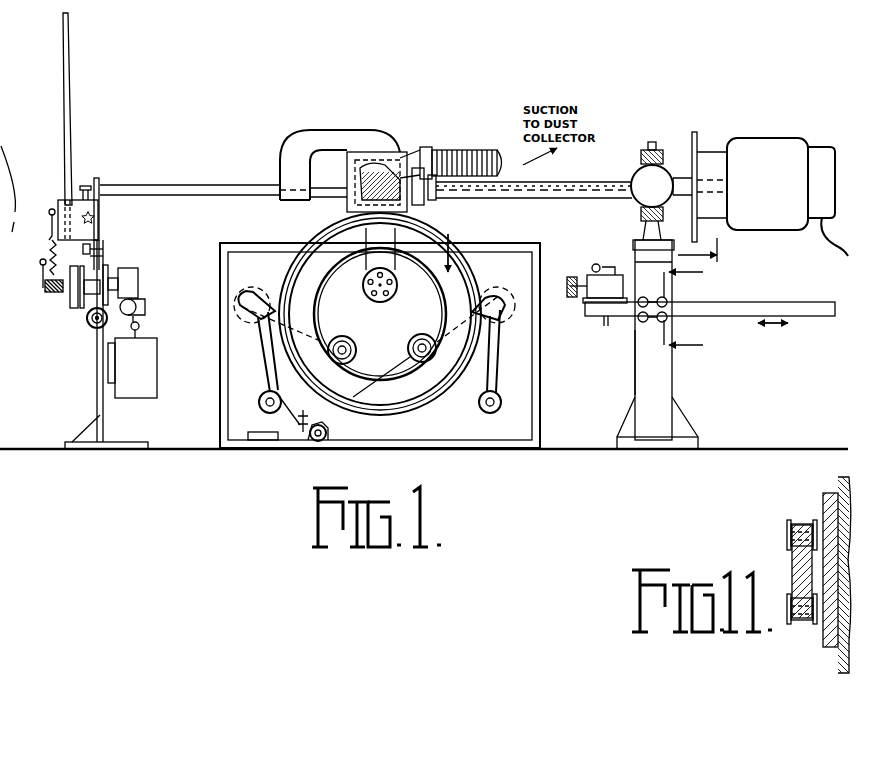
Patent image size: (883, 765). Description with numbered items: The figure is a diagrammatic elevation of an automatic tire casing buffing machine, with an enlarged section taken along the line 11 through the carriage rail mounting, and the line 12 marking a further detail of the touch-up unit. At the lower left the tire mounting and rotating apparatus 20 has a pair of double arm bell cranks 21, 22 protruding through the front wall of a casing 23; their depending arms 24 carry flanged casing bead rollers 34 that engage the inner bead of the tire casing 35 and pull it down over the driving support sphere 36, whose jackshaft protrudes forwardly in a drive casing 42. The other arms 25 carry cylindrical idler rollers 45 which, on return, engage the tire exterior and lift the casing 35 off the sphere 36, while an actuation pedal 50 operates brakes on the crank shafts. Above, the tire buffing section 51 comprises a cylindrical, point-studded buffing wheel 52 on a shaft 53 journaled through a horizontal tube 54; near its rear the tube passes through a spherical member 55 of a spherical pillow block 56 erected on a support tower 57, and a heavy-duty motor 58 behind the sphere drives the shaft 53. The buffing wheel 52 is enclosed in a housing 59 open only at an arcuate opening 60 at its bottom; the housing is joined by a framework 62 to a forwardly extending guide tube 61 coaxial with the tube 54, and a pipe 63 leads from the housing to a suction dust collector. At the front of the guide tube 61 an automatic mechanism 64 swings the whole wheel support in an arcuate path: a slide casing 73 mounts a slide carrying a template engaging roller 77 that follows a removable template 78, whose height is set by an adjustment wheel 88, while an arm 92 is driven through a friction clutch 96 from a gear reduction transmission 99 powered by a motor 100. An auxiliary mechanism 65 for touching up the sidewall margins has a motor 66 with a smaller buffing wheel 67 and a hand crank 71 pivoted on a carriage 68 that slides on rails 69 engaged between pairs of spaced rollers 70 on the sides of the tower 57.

In FIG. 1, the section line 11— 11 is at (696, 312).
In FIG. 1, the section line 12— 12 is at (585, 243).
In FIG. 1, the tire mounting and rotating apparatus 20 is at (274, 453).
In FIG. 1, the double arm bell crank 21 is at (226, 320).
In FIG. 1, the double arm bell crank 22 is at (532, 315).
In FIG. 1, the casing 23 is at (542, 395).
In FIG. 1, the arms 24 is at (327, 345).
In FIG. 1, the arms 25 is at (272, 386).
In FIG. 1, the casing bead roller 34 is at (364, 346).
In FIG. 1, the tire casing 35 is at (440, 398).
In FIG. 1, the support sphere 36 is at (457, 246).
In FIG. 1, the drive casing 42 is at (397, 287).
In FIG. 1, the idler rollers 45 is at (261, 406).
In FIG. 1, the actuation pedal 50 is at (300, 425).
In FIG. 1, the tire buffing section 51 is at (462, 146).
In FIG. 1, the buffing wheel 52 is at (441, 198).
In FIG. 1, the shaft 53 is at (512, 196).
In FIG. 1, the tube 54 is at (553, 182).
In FIG. 1, the spherical member 55 is at (635, 206).
In FIG. 1, the spherical pillow block 56 is at (630, 156).
In FIG. 1, the support tower 57 is at (678, 368).
In FIG. 11, the support tower 57 is at (835, 652).
In FIG. 1, the motor 58 is at (752, 230).
In FIG. 1, the housing 59 is at (366, 150).
In FIG. 1, the arcuate opening 60 is at (348, 200).
In FIG. 1, the guide tube 61 is at (157, 188).
In FIG. 1, the framework 62 is at (283, 136).
In FIG. 1, the pipe 63 is at (418, 150).
In FIG. 1, the automatic mechanism 64 is at (126, 234).
In FIG. 1, the auxiliary mechanism 65 is at (606, 329).
In FIG. 1, the motor 66 is at (585, 274).
In FIG. 1, the buffing wheel 67 is at (566, 295).
In FIG. 1, the carriage 68 is at (636, 352).
In FIG. 1, the rails 69 is at (730, 302).
In FIG. 11, the rails 69 is at (790, 560).
In FIG. 1, the rollers 70 is at (666, 301).
In FIG. 11, the rollers 70 is at (803, 520).
In FIG. 1, the hand crank 71 is at (612, 266).
In FIG. 1, the slide casing 73 is at (104, 214).
In FIG. 1, the template engaging roller 77 is at (104, 249).
In FIG. 1, the template 78 is at (105, 258).
In FIG. 1, the adjustment wheel 88 is at (93, 328).
In FIG. 1, the arm 92 is at (73, 146).
In FIG. 1, the friction clutch 96 is at (75, 312).
In FIG. 1, the gear reduction transmission 99 is at (146, 287).
In FIG. 1, the motor 100 is at (157, 372).